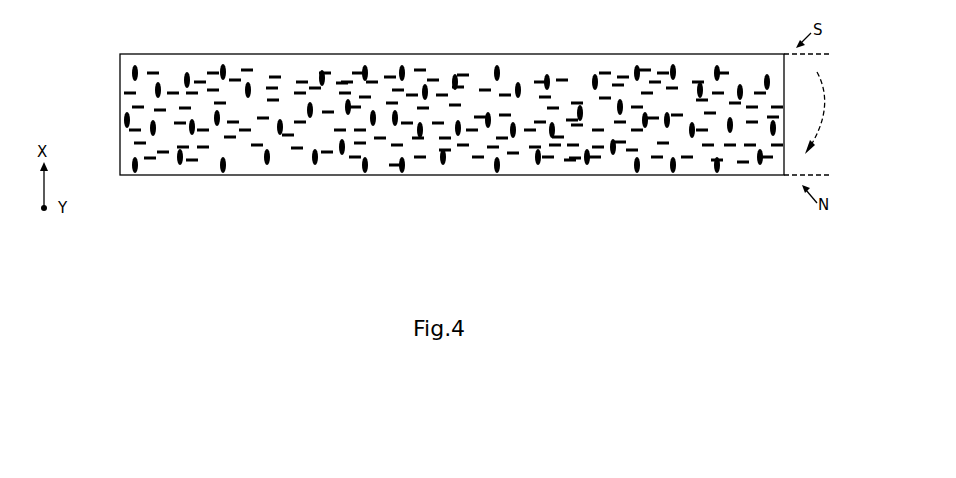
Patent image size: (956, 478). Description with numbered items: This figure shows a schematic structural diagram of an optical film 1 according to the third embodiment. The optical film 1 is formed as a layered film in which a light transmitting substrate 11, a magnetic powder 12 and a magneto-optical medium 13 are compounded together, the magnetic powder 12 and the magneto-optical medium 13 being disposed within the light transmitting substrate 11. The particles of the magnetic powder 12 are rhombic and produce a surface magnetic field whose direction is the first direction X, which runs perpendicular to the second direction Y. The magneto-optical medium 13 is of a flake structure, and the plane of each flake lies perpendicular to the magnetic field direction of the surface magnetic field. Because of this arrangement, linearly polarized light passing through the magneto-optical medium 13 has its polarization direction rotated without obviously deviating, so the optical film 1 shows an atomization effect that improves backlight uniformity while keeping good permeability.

The optical film 1 is at (450, 29).
The light transmitting substrate 11 is at (115, 68).
The magnetic powder 12 is at (116, 117).
The magneto-optical medium 13 is at (130, 146).